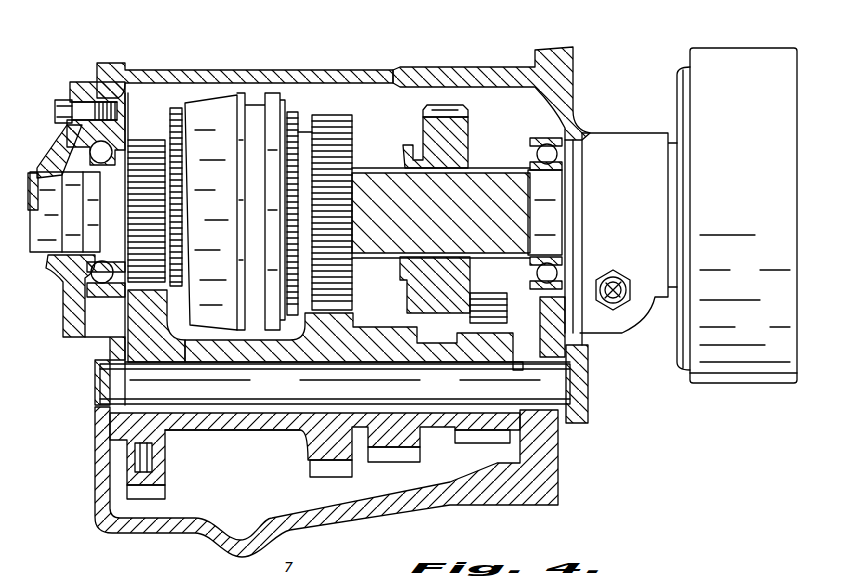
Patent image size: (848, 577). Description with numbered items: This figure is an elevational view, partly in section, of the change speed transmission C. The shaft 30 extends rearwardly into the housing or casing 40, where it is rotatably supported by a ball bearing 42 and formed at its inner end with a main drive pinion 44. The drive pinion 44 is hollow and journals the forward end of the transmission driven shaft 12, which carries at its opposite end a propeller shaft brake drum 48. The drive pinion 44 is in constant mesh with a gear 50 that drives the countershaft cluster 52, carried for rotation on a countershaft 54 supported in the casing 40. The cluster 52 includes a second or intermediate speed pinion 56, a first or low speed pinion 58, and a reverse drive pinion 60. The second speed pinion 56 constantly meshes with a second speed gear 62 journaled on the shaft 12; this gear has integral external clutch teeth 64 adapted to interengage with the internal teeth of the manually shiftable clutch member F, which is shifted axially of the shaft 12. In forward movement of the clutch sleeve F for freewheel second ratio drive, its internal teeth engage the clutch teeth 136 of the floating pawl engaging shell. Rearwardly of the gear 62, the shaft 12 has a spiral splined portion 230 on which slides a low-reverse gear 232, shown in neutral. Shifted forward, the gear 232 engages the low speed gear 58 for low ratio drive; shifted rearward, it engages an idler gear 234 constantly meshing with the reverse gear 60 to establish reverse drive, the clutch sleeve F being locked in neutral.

The transmission C is at (296, 70).
The housing or casing 40 is at (146, 70).
The shaft 30 is at (58, 222).
The ball bearing 42 is at (72, 300).
The main drive pinion 44 is at (140, 140).
The clutch teeth 136 is at (178, 108).
The manually shiftable clutch member F is at (212, 98).
The external clutch teeth 64 is at (290, 112).
The second speed gear 62 is at (340, 115).
The spiral splined portion 230 is at (492, 165).
The low-reverse gear 232 is at (468, 117).
The idler gear 234 is at (487, 305).
The transmission driven shaft 12 is at (552, 222).
The countershaft 54 is at (110, 388).
The gear 50 is at (165, 498).
The countershaft cluster 52 is at (248, 431).
The second or intermediate speed pinion 56 is at (330, 478).
The first or low speed pinion 58 is at (388, 462).
The reverse drive pinion 60 is at (492, 443).
The propeller shaft brake drum 48 is at (752, 122).